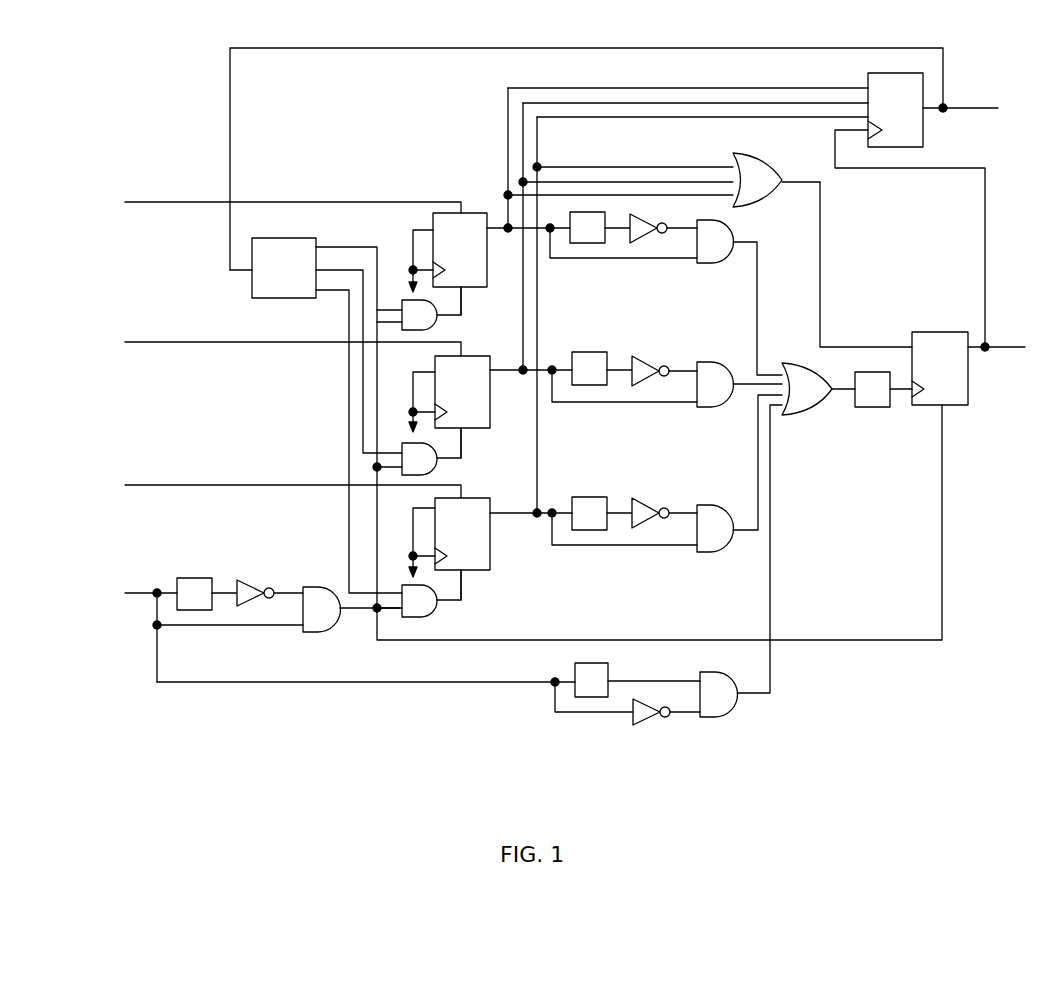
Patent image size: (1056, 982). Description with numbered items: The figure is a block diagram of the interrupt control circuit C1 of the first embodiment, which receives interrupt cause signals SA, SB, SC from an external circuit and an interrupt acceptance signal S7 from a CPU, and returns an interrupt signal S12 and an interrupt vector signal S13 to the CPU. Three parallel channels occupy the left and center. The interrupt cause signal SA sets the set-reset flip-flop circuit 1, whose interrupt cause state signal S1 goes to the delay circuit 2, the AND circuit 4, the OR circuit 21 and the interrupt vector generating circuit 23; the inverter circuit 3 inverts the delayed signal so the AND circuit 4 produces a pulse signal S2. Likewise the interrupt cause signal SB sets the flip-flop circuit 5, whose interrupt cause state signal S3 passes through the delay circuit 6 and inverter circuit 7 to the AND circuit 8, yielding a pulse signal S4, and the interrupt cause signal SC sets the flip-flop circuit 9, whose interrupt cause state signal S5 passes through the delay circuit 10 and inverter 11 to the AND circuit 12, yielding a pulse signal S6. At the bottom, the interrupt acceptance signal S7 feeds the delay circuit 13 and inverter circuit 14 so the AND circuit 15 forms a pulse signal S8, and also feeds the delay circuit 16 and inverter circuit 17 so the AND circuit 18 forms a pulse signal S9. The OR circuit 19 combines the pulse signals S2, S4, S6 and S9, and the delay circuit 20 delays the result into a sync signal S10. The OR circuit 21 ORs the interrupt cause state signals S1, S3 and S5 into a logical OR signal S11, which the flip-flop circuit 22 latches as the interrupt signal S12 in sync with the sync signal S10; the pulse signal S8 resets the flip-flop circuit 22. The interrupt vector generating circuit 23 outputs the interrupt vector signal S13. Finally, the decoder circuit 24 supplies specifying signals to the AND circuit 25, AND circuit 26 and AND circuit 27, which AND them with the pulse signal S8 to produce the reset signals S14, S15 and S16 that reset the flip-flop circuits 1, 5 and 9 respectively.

The flip-flop circuit 1 is at (433, 220).
The delay circuit 2 is at (588, 244).
The inverter circuit 3 is at (645, 244).
The AND circuit 4 is at (710, 264).
The flip-flop circuit 5 is at (435, 365).
The delay circuit 6 is at (590, 386).
The inverter circuit 7 is at (646, 387).
The AND circuit 8 is at (705, 408).
The flip-flop circuit 9 is at (435, 507).
The delay circuit 10 is at (590, 531).
The inverter circuit 11 is at (646, 529).
The AND circuit 12 is at (710, 553).
The delay circuit 13 is at (190, 578).
The inverter circuit 14 is at (253, 580).
The AND circuit 15 is at (318, 586).
The delay circuit 16 is at (610, 672).
The inverter circuit 17 is at (648, 727).
The AND circuit 18 is at (738, 710).
The OR circuit 19 is at (802, 418).
The delay circuit 20 is at (868, 408).
The OR circuit 21 is at (770, 160).
The flip-flop circuit 22 is at (935, 331).
The interrupt vector generating circuit 23 is at (925, 128).
The decoder circuit 24 is at (283, 238).
The AND circuit 25 is at (440, 328).
The AND circuit 26 is at (440, 472).
The AND circuit 27 is at (440, 613).
The interrupt cause state signal S1 is at (505, 224).
The pulse signal S2 is at (759, 296).
The interrupt cause state signal S3 is at (520, 376).
The pulse signal S4 is at (745, 380).
The interrupt cause state signal S5 is at (530, 520).
The pulse signal S6 is at (758, 474).
The interrupt acceptance signal S7 is at (140, 590).
The pulse signal S8 is at (358, 613).
The pulse signal S9 is at (772, 668).
The sync signal S10 is at (900, 392).
The logical OR signal S11 is at (822, 230).
The interrupt signal S12 is at (1008, 345).
The interrupt vector signal S13 is at (972, 106).
The reset signal S14 is at (463, 294).
The reset signal S15 is at (463, 436).
The reset signal S16 is at (463, 578).
The interrupt cause signal SA is at (148, 198).
The interrupt cause signal SB is at (148, 340).
The interrupt cause signal SC is at (148, 483).
The interrupt control circuit C1 is at (490, 732).